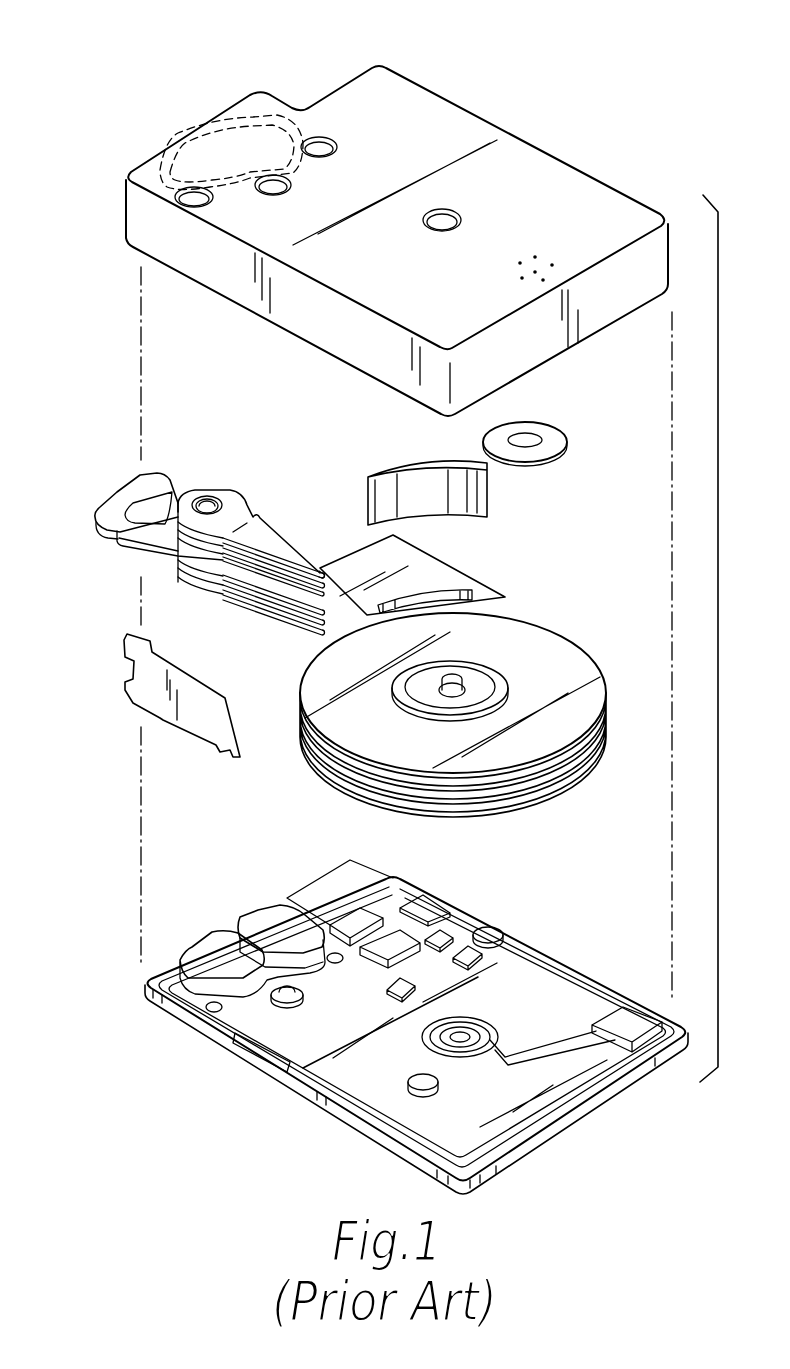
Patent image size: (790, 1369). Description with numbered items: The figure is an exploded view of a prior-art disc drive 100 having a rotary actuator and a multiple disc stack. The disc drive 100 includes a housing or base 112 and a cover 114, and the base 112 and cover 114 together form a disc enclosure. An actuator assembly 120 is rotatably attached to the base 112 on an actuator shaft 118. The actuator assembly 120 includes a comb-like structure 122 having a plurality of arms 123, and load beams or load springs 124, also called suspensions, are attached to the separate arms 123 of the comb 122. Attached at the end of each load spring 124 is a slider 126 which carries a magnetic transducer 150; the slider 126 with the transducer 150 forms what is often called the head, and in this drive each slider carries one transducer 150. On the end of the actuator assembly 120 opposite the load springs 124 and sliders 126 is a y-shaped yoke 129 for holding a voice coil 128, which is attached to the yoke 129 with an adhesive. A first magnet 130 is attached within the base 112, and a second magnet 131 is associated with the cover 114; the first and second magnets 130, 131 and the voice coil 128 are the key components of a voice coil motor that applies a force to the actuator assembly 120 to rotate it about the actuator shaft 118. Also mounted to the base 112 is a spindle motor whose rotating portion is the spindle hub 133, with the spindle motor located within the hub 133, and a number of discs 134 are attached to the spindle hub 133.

The disc drive 100 is at (535, 38).
The base 112 is at (580, 992).
The cover 114 is at (547, 173).
The actuator shaft 118 is at (210, 500).
The actuator assembly 120 is at (162, 548).
The comb-like structure 122 is at (230, 608).
The arms 123 is at (270, 518).
The load springs 124 is at (278, 543).
The slider 126 is at (318, 573).
The voice coil 128 is at (118, 505).
The yoke 129 is at (115, 532).
The first magnet 130 is at (223, 135).
The second magnet 131 is at (203, 957).
The spindle hub 133 is at (458, 676).
The discs 134 is at (573, 662).
The magnetic transducer 150 is at (323, 573).